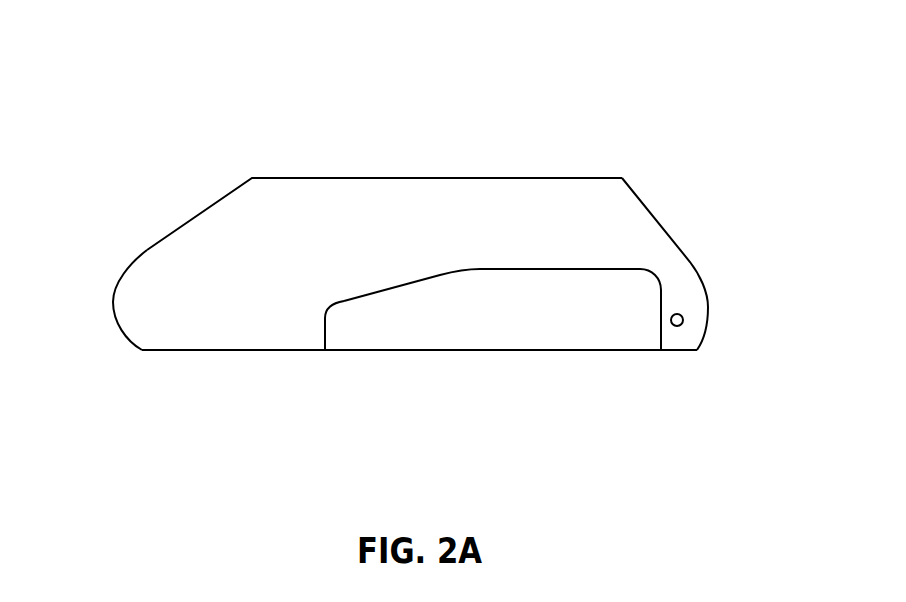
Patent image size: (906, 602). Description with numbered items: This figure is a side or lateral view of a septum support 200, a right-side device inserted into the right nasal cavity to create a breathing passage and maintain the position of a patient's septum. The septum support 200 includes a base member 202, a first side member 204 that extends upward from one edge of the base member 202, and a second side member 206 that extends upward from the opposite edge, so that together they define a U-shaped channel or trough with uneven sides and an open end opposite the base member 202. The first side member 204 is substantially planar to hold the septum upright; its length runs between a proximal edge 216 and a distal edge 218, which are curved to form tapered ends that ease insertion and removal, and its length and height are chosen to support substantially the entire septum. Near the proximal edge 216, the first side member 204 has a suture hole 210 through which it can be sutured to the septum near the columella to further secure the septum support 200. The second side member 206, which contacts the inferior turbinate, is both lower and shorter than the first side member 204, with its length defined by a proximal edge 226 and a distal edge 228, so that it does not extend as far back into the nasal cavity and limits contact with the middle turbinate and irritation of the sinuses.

The septum support 200 is at (116, 86).
The base member 202 is at (385, 351).
The first side member 204 is at (197, 233).
The second side member 206 is at (627, 330).
The suture hole 210 is at (683, 322).
The proximal edge 216 is at (708, 302).
The distal edge 218 is at (113, 298).
The proximal edge 226 is at (663, 293).
The distal edge 228 is at (323, 330).